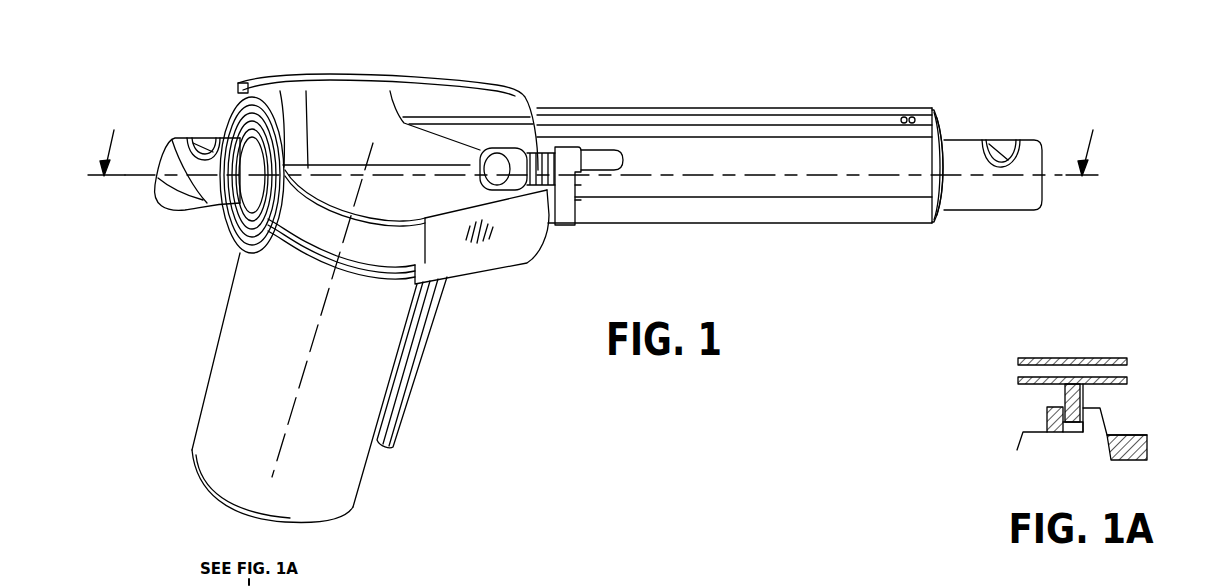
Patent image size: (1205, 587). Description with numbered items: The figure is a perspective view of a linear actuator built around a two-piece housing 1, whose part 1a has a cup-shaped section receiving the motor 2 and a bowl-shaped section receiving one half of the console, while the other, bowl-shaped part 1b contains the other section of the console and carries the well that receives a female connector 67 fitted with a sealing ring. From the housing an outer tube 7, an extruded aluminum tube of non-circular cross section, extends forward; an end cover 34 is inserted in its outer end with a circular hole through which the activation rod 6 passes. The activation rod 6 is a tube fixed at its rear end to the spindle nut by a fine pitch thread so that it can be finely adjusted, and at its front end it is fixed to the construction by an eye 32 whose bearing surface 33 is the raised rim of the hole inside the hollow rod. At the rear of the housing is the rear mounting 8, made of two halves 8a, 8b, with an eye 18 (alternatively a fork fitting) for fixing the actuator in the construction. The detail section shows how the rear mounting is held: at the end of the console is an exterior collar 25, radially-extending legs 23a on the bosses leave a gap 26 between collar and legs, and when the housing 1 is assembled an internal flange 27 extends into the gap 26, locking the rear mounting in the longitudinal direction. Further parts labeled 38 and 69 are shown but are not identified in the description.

In FIG. 1, the housing 1 is at (232, 290).
In FIG. 1, the housing part 1a is at (232, 398).
In FIG. 1, the housing part 1b is at (327, 100).
In FIG. 1, the motor 2 is at (593, 140).
In FIG. 1, the activation rod 6 is at (978, 203).
In FIG. 1, the outer tube 7 is at (738, 215).
In FIG. 1, the rear mounting 8 is at (165, 200).
In FIG. 1, the rear mounting half 8a is at (157, 190).
In FIG. 1, the rear mounting half 8b is at (167, 163).
In FIG. 1, the eye 18 is at (198, 138).
In FIG. 1, the eye 32 is at (1007, 152).
In FIG. 1, the bearing surface 33 is at (988, 143).
In FIG. 1, the end cover 34 is at (936, 224).
In FIG. 1, the barrel tube 38 is at (700, 110).
In FIG. 1, the female connector 67 is at (497, 162).
In FIG. 1, the trigger 69 is at (423, 352).
In FIG. 1A, the radially-extending legs 23a is at (1097, 422).
In FIG. 1A, the exterior collar 25 is at (1047, 413).
In FIG. 1A, the gap 26 is at (1072, 433).
In FIG. 1A, the internal flange 27 is at (1083, 396).